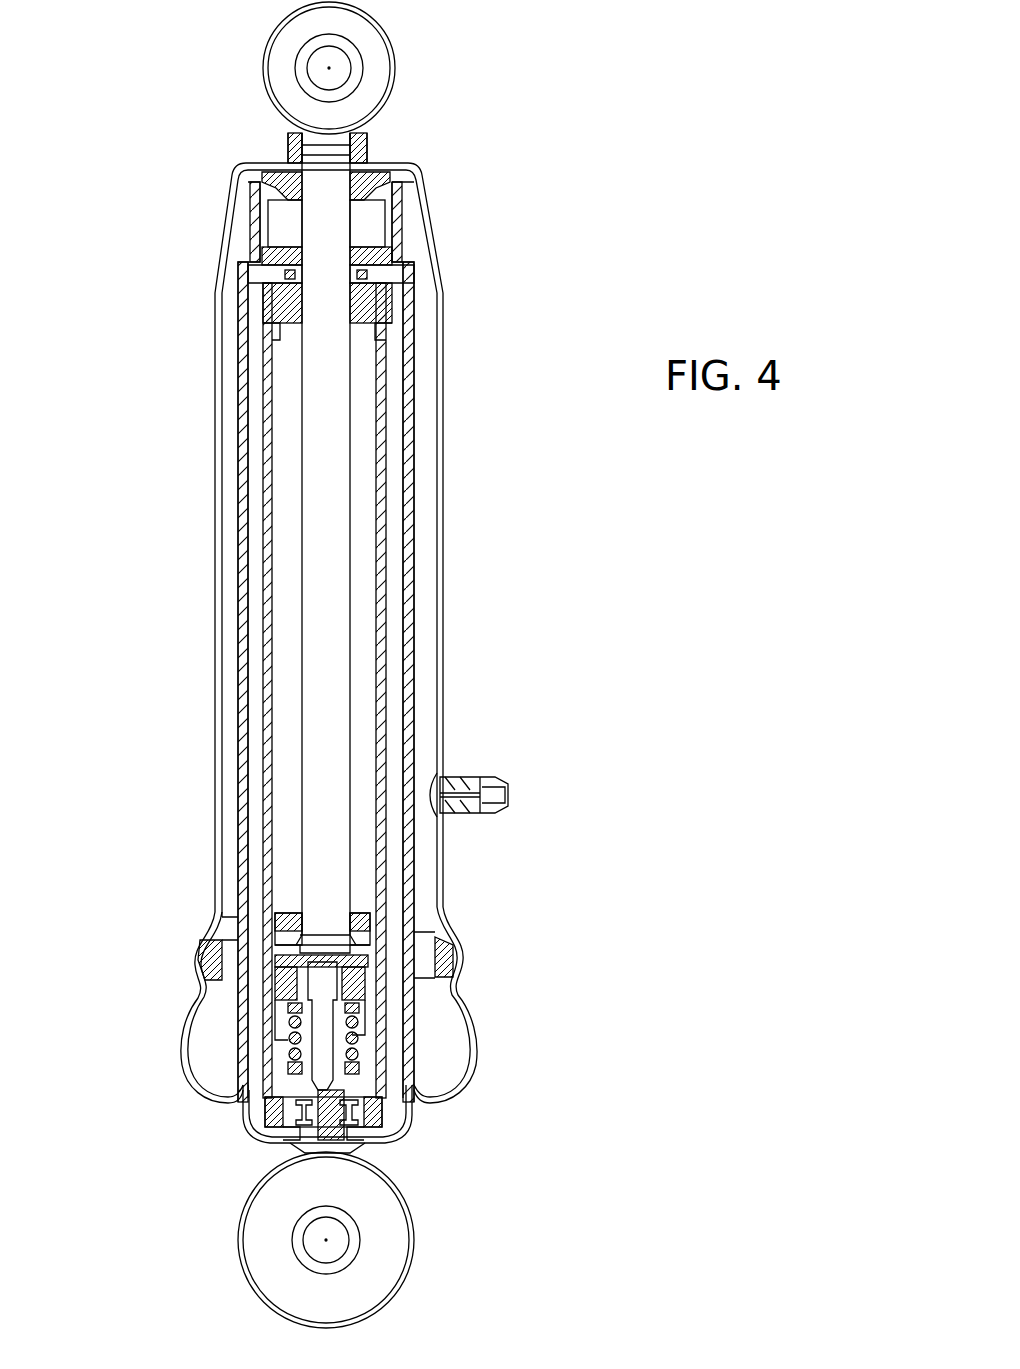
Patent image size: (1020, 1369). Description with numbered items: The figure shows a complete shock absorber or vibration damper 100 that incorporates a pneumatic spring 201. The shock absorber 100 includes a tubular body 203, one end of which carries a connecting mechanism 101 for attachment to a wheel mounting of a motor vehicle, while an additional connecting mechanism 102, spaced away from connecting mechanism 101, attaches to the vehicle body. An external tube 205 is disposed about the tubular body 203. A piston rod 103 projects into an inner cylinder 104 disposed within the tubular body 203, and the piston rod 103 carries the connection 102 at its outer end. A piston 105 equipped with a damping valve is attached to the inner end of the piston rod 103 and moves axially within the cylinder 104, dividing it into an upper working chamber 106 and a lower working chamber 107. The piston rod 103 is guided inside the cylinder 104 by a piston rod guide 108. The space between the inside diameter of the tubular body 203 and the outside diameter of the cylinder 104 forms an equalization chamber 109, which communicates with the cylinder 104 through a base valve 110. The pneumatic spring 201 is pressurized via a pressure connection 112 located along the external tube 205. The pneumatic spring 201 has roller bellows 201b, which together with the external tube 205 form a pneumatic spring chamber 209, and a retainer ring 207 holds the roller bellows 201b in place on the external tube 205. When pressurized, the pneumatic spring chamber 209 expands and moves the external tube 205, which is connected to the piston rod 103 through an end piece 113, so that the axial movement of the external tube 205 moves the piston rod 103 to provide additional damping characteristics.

The shock absorber 100 is at (141, 661).
The connecting mechanism 101 is at (385, 1190).
The additional connecting mechanism 102 is at (374, 44).
The piston rod 103 is at (337, 210).
The inner cylinder 104 is at (385, 607).
The piston 105 is at (283, 987).
The upper working chamber 106 is at (363, 888).
The lower working chamber 107 is at (287, 1090).
The piston rod guide 108 is at (392, 277).
The equalization chamber 109 is at (257, 827).
The base valve 110 is at (288, 1120).
The pressure connection 112 is at (482, 773).
The end piece 113 is at (383, 165).
The pneumatic spring 201 is at (545, 1028).
The roller bellows 201b is at (522, 1008).
The tubular body 203 is at (417, 713).
The external tube 205 is at (443, 637).
The retainer ring 207 is at (453, 942).
The pneumatic spring chamber 209 is at (450, 1018).